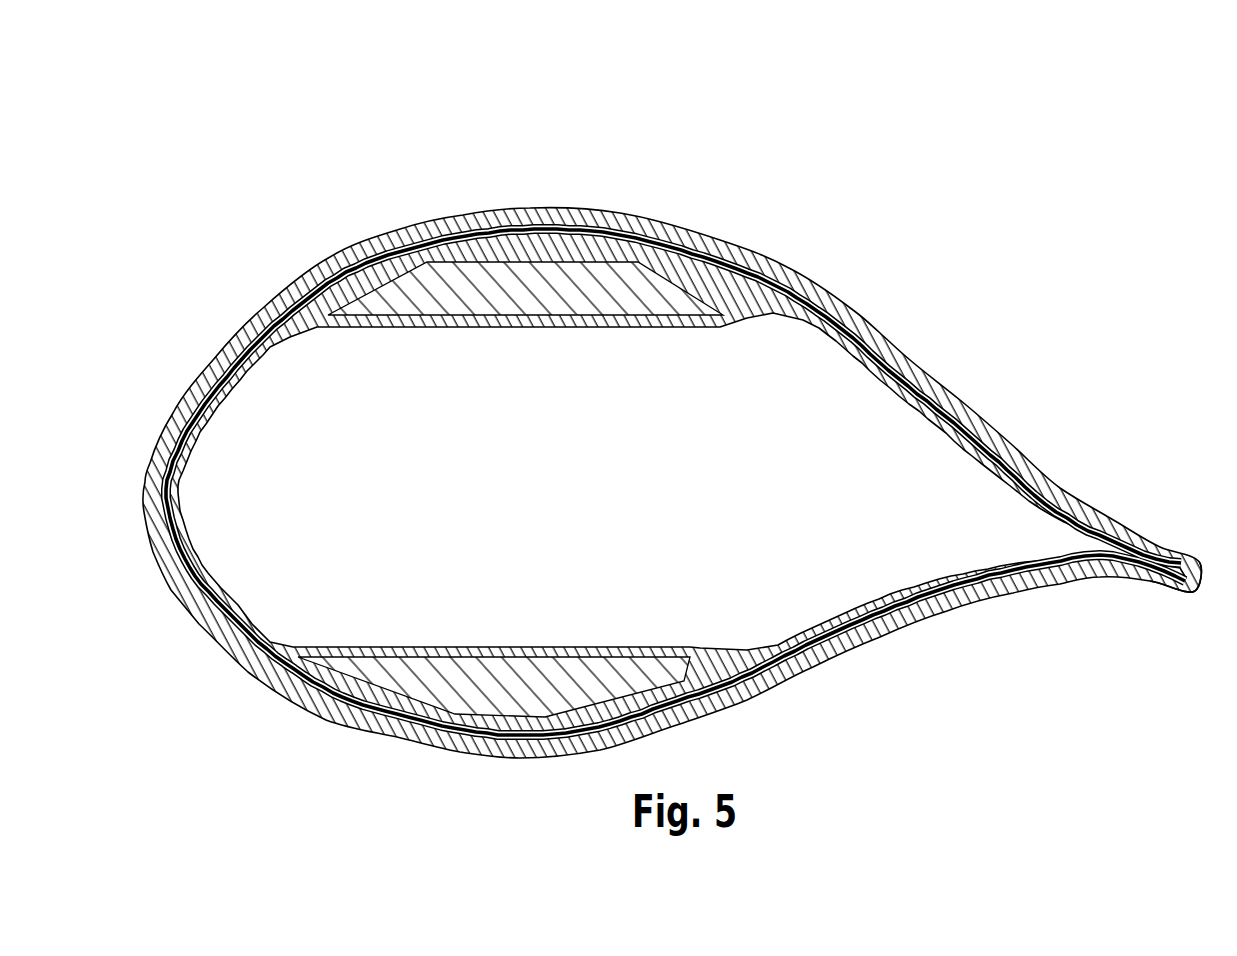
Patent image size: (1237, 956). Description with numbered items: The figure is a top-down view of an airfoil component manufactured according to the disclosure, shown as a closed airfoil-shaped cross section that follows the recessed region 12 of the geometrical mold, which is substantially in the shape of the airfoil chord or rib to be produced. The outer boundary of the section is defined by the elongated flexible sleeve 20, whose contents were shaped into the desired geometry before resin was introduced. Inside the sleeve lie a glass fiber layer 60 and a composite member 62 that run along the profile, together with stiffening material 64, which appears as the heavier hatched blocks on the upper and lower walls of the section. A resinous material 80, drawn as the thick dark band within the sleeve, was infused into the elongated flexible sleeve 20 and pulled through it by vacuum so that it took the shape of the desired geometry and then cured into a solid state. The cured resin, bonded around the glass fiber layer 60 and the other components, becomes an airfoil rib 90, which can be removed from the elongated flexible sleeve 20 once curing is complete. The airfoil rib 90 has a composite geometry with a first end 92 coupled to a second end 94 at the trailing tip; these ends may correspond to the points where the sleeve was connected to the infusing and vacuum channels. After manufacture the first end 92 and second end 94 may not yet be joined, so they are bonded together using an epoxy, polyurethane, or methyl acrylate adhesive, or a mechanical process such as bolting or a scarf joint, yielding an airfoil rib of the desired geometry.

The recessed region 12 is at (686, 418).
The elongated flexible sleeve 20 is at (365, 244).
The glass fiber layer 60 is at (750, 290).
The composite member 62 is at (728, 258).
The stiffening material 64 is at (497, 280).
The resinous material 80 is at (766, 308).
The airfoil rib 90 is at (342, 149).
The first end 92 is at (1198, 563).
The second end 94 is at (1182, 591).